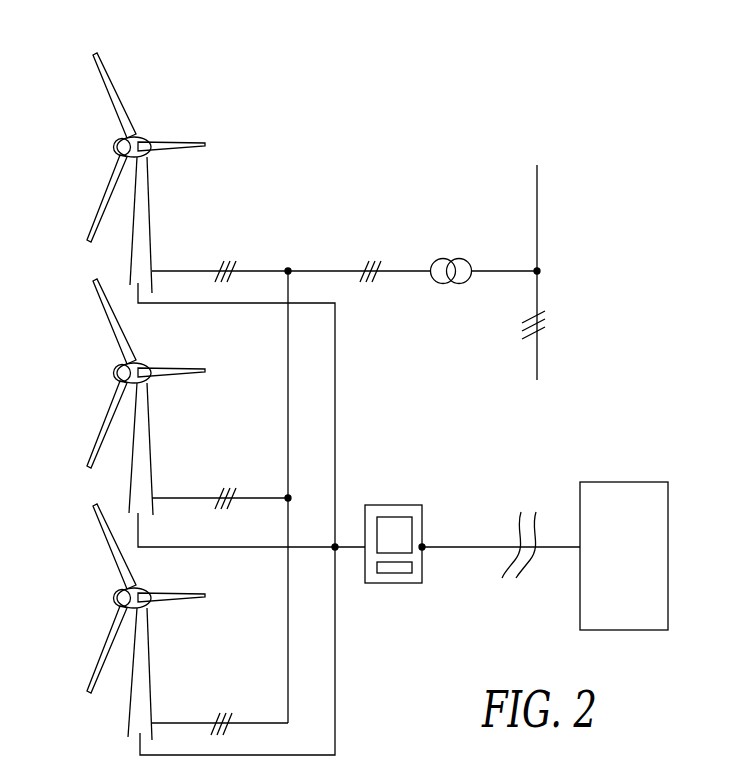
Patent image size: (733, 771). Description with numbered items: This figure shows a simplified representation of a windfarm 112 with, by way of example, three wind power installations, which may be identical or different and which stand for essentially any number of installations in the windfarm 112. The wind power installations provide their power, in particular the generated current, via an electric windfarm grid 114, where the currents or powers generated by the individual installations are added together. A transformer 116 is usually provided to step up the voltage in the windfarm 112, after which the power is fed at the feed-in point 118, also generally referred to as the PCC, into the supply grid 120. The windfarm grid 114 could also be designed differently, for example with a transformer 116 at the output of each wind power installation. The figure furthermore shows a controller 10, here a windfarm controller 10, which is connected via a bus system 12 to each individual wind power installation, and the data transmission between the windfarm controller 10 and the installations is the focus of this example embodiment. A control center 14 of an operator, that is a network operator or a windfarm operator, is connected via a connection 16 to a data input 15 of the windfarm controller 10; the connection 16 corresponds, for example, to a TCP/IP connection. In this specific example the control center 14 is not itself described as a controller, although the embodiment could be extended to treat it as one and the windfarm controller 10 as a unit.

The windfarm controller 10 is at (393, 505).
The bus system 12 is at (335, 697).
The control center 14 is at (622, 482).
The data input 15 is at (424, 549).
The connection 16 is at (463, 547).
The windfarm 112 is at (368, 148).
The windfarm grid 114 is at (330, 271).
The transformer 116 is at (453, 257).
The feed-in point 118 is at (541, 261).
The supply grid 120 is at (538, 195).